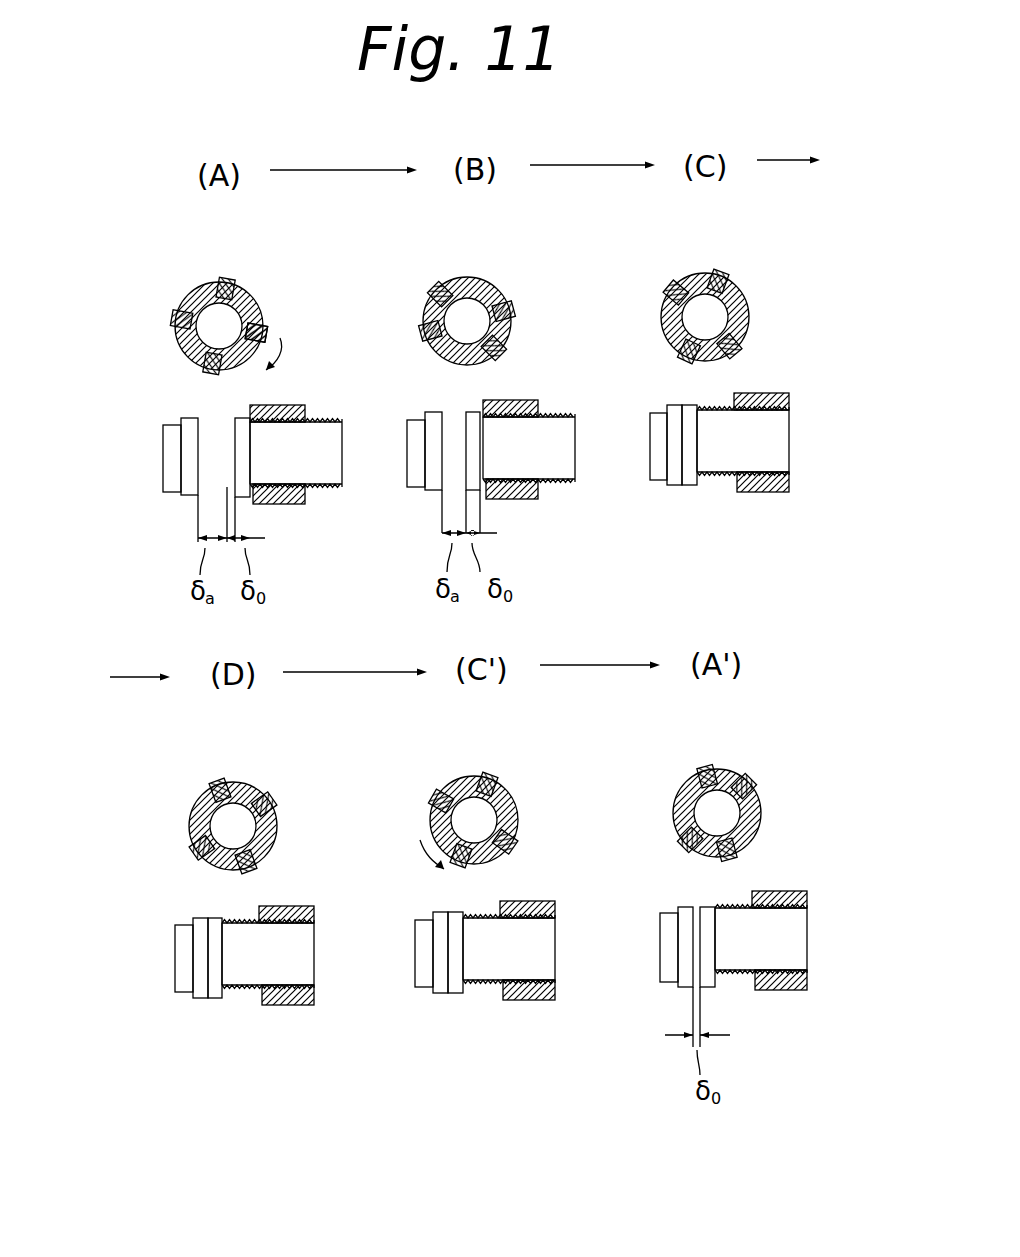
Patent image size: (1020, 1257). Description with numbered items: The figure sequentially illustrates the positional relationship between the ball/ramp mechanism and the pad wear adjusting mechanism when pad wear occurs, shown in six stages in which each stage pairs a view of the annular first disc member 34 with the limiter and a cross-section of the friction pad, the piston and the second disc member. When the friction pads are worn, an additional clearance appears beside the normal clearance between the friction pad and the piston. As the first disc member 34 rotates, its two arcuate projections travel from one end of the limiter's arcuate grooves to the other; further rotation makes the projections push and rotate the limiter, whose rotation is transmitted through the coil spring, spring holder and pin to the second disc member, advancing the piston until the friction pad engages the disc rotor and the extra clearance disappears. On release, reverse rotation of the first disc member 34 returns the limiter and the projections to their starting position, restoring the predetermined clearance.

The first disc member 34 is at (172, 323).